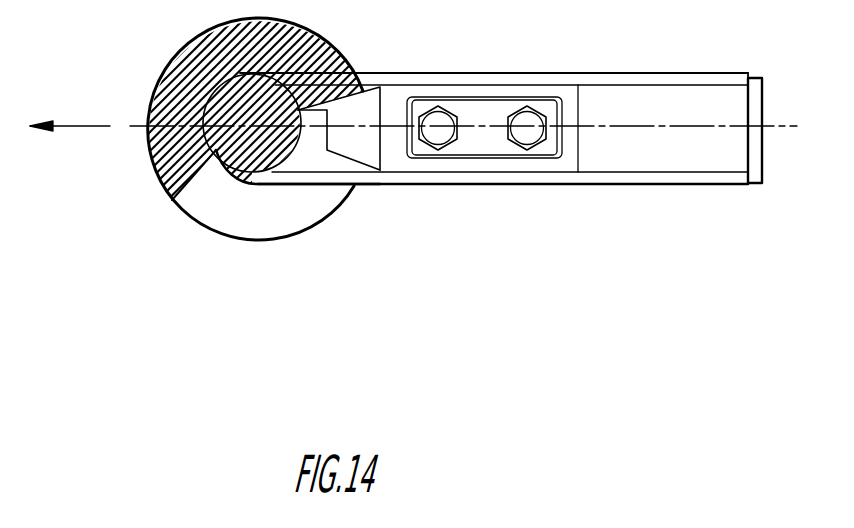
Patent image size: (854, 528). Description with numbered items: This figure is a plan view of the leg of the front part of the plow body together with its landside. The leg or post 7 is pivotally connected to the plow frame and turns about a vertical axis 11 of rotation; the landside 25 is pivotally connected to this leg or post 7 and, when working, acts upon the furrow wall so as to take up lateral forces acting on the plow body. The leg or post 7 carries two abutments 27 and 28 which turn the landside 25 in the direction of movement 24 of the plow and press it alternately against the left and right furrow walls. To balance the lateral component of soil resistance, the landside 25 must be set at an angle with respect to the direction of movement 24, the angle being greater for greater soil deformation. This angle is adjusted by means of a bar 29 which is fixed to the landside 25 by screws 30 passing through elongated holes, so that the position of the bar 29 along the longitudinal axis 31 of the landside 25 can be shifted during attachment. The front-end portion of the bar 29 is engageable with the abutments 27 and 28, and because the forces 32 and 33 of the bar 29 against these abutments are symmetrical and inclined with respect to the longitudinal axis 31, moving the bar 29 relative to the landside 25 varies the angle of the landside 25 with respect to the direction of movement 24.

The leg or post 7 is at (200, 72).
The vertical axis of rotation 11 is at (253, 125).
The direction of movement 24 is at (97, 128).
The landside 25 is at (613, 74).
The abutment 27 is at (199, 183).
The abutment 28 is at (305, 108).
The bar 29 is at (482, 108).
The screws 30 is at (438, 113).
The longitudinal axis 31 is at (775, 125).
The force 32 is at (348, 187).
The force 33 is at (364, 88).